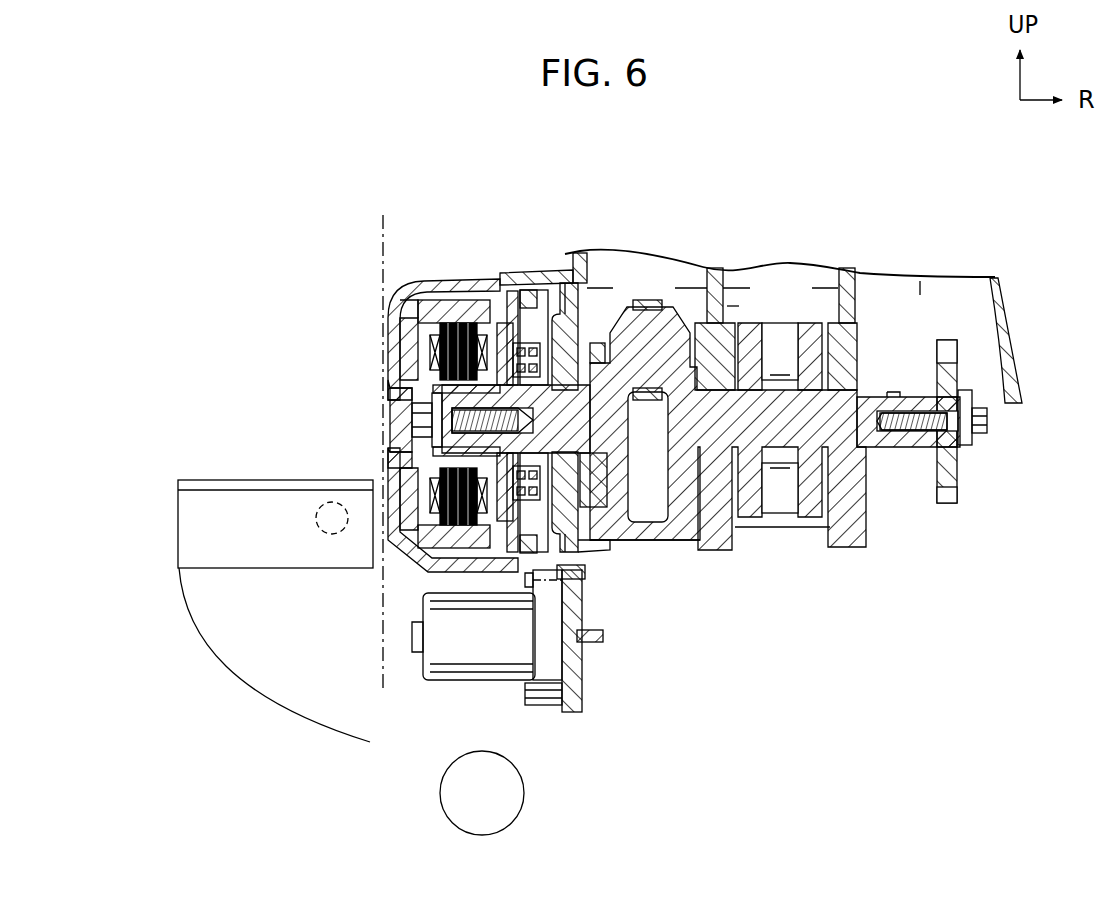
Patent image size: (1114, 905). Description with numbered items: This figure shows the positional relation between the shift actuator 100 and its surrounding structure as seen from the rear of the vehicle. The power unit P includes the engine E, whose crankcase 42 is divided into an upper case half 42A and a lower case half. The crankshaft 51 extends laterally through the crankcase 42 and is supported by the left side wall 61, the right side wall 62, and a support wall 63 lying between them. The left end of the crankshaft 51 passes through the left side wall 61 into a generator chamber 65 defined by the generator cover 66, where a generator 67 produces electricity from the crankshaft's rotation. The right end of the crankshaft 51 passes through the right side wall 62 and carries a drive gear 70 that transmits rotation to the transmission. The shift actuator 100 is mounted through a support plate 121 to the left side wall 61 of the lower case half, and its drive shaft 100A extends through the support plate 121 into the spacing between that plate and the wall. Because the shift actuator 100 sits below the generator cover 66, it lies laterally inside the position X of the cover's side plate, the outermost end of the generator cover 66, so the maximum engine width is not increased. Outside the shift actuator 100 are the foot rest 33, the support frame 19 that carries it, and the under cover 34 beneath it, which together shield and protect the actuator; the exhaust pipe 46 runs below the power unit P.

The support frame 19 is at (332, 502).
The foot rest 33 is at (242, 480).
The under cover 34 is at (250, 690).
The crankcase 42 is at (528, 223).
The upper case half 42A is at (566, 270).
The exhaust pipe 46 is at (527, 792).
The crankshaft 51 is at (858, 397).
The left side wall 61 is at (575, 262).
The right side wall 62 is at (855, 283).
The support wall 63 is at (723, 283).
The generator chamber 65 is at (503, 293).
The generator cover 66 is at (433, 281).
The generator 67 is at (460, 282).
The drive gear 70 is at (932, 342).
The shift actuator 100 is at (462, 685).
The drive shaft 100A is at (592, 644).
The support plate 121 is at (585, 697).
The position of the side plate of the generator cover X is at (383, 236).
The power unit P is at (993, 262).
The engine E is at (1008, 308).